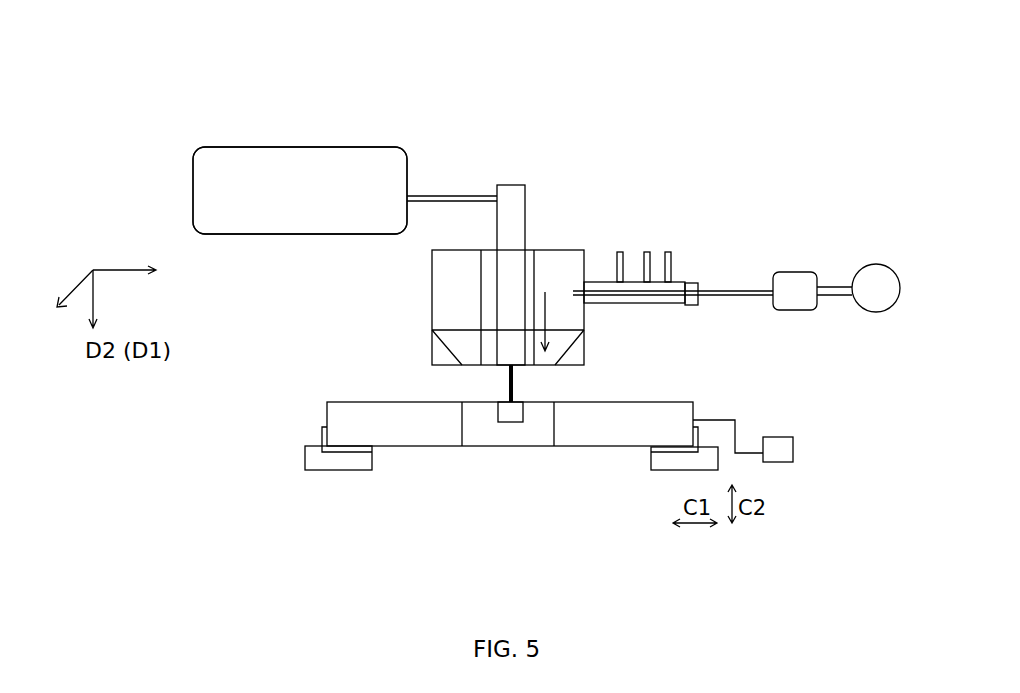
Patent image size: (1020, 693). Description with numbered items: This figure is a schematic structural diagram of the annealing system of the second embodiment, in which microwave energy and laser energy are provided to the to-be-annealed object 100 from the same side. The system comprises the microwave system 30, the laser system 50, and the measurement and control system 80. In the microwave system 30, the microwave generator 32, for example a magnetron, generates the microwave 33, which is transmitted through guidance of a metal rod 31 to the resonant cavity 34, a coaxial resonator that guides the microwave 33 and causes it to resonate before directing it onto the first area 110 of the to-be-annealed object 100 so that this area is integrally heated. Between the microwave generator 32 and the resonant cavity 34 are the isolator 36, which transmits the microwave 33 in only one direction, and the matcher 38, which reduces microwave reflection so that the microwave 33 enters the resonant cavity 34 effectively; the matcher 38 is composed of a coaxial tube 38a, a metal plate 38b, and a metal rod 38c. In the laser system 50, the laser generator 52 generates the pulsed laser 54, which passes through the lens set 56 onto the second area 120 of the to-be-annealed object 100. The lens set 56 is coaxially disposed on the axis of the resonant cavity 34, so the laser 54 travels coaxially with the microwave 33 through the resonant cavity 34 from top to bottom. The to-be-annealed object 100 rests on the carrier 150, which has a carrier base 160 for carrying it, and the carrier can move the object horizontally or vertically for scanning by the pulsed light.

The microwave system 30 is at (757, 285).
The metal rod 31 is at (765, 295).
The microwave generator 32 is at (884, 279).
The microwave 33 is at (545, 313).
The resonant cavity 34 is at (556, 256).
The isolator 36 is at (806, 305).
The matcher 38 is at (668, 264).
The coaxial tube 38a is at (670, 301).
The metal plate 38b is at (690, 284).
The metal rod 38c is at (647, 262).
The laser system 50 is at (378, 107).
The laser generator 52 is at (272, 162).
The laser 54 is at (516, 386).
The lens set 56 is at (515, 205).
The measurement and control system 80 is at (777, 440).
The to-be-annealed object 100 is at (696, 411).
The first area 110 is at (478, 422).
The second area 120 is at (497, 401).
The carrier 150 is at (315, 465).
The carrier base 160 is at (322, 432).